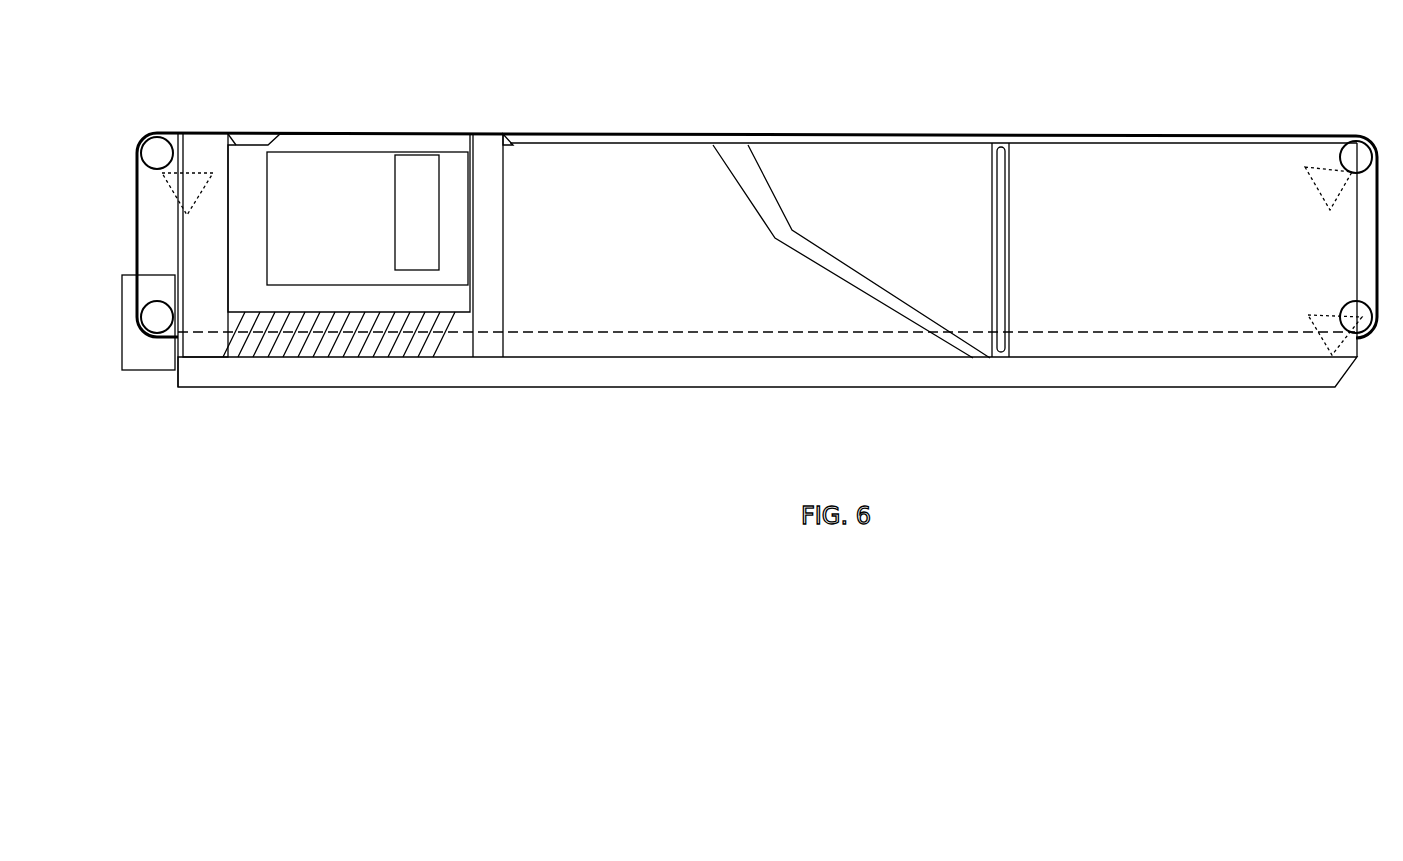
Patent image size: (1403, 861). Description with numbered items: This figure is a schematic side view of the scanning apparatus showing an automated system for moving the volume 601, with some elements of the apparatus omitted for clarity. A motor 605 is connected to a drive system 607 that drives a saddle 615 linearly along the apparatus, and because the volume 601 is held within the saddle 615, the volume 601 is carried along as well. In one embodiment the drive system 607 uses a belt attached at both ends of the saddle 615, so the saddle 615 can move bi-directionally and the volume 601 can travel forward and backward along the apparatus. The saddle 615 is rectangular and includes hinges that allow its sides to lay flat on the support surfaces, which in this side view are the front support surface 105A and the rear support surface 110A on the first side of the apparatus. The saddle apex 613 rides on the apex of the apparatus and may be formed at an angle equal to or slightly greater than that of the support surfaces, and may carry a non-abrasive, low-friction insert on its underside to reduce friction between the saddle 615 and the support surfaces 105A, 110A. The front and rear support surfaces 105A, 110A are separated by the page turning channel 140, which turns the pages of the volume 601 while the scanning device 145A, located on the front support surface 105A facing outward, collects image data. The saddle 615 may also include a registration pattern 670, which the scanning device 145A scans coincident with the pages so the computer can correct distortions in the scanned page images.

The volume 601 is at (367, 180).
The motor 605 is at (147, 372).
The drive system 607 is at (158, 322).
The saddle apex 613 is at (233, 140).
The saddle 615 is at (203, 153).
The registration pattern 670 is at (290, 342).
The front support surface 105A is at (870, 182).
The rear support surface 110A is at (697, 200).
The page turning channel 140 is at (758, 183).
The scanning device 145A is at (1008, 145).